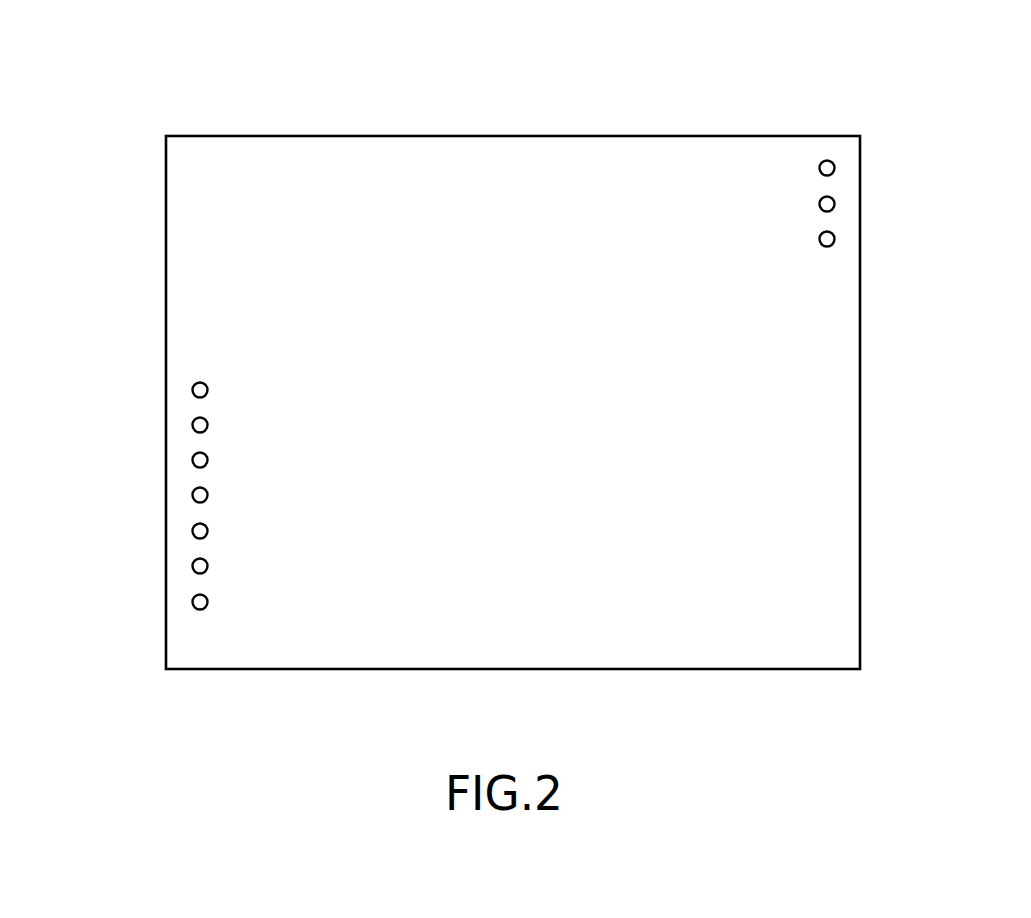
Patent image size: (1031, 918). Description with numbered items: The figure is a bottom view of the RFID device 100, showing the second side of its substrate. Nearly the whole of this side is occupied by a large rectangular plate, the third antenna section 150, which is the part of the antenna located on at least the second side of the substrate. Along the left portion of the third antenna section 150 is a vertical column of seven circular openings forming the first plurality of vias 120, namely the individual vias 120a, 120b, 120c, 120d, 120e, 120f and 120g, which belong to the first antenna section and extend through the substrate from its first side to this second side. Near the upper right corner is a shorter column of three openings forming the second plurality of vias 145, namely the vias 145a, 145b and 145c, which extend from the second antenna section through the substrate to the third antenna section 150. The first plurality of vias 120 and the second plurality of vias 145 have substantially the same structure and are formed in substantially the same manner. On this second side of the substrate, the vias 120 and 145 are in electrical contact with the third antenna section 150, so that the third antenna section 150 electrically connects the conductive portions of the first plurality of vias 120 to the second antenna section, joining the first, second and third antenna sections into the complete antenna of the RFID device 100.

The RFID device 100 is at (1001, 77).
The third antenna section 150 is at (554, 400).
The first plurality of vias 120 is at (221, 375).
The via 120a is at (192, 390).
The via 120b is at (192, 425).
The via 120c is at (192, 460).
The via 120d is at (192, 495).
The via 120e is at (192, 531).
The via 120f is at (192, 566).
The via 120g is at (192, 602).
The second plurality of vias 145 is at (816, 160).
The via 145a is at (834, 168).
The via 145b is at (834, 204).
The via 145c is at (834, 239).